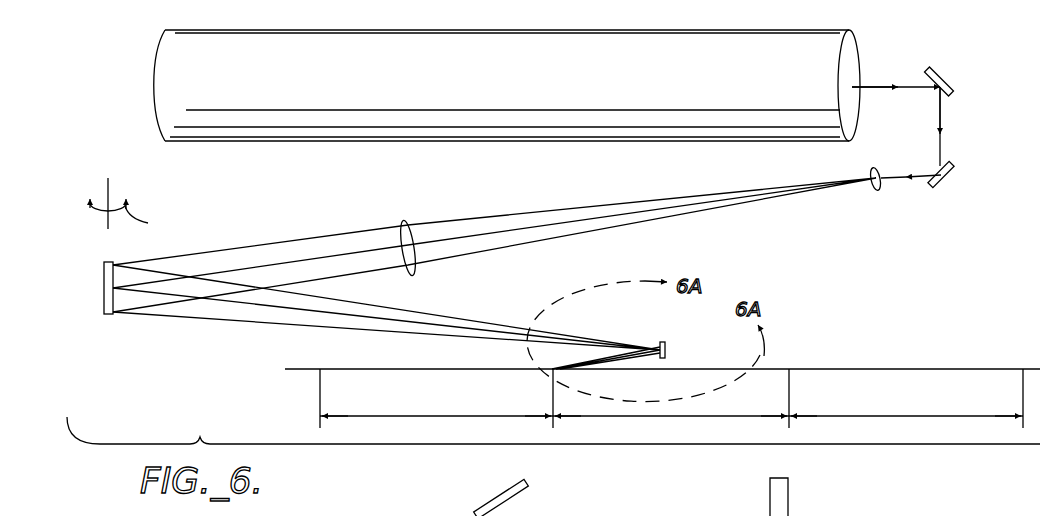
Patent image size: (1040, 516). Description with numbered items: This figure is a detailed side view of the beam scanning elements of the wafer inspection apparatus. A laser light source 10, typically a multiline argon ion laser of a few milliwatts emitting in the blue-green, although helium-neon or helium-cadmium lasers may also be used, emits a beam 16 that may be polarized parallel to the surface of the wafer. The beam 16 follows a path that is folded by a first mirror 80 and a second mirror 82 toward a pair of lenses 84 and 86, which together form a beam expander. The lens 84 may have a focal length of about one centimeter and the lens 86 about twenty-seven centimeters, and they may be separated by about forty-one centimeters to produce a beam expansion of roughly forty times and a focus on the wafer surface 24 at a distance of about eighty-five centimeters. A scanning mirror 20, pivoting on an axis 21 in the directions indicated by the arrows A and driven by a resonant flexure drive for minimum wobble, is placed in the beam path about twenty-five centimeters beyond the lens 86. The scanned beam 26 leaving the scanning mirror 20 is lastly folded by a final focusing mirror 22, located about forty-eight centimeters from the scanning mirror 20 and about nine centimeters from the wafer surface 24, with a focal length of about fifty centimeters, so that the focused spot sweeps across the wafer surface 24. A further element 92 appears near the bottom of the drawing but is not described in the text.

The laser light source 10 is at (340, 126).
The beam 16 is at (877, 85).
The scanning mirror 20 is at (103, 285).
The axis 21 is at (105, 183).
The final focusing mirror 22 is at (667, 348).
The wafer surface 24 is at (297, 369).
The beam 26 is at (418, 308).
The mirror 80 is at (948, 82).
The mirror 82 is at (951, 172).
The lens 84 is at (877, 191).
The lens 86 is at (402, 222).
The collection mirror 92 is at (470, 515).